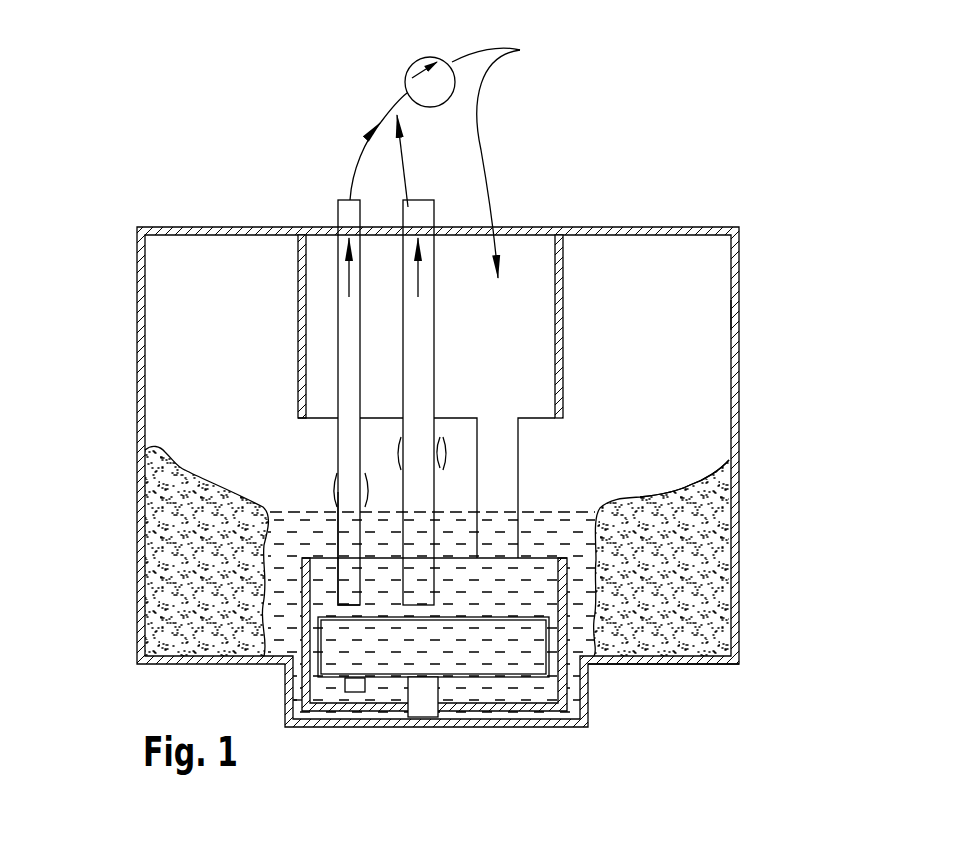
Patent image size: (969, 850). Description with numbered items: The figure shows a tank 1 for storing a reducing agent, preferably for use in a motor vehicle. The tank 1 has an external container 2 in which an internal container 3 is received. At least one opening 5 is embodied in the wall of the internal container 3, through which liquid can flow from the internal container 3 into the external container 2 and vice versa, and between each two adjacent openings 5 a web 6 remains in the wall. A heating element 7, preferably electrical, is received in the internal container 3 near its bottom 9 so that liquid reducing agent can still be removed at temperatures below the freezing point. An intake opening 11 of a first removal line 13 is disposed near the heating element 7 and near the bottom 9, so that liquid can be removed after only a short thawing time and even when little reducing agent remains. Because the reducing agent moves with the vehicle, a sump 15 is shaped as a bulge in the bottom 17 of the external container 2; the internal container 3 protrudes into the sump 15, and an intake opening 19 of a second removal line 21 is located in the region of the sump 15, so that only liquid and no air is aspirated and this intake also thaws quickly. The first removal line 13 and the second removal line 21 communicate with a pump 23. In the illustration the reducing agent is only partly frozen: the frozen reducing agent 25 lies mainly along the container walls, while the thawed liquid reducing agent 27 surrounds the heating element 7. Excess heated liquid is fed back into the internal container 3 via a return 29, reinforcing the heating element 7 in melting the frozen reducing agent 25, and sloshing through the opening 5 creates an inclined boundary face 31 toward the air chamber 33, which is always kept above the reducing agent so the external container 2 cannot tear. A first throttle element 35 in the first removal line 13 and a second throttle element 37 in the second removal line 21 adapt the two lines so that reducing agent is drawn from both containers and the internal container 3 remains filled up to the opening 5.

The tank 1 is at (137, 206).
The external container 2 is at (183, 232).
The internal container 3 is at (298, 328).
The opening 5 is at (538, 497).
The web 6 is at (507, 475).
The heating element 7 is at (533, 657).
The bottom 9 is at (332, 693).
The intake opening 11 is at (358, 692).
The first removal line 13 is at (340, 445).
The sump 15 is at (492, 711).
The bottom 17 is at (688, 664).
The intake opening 19 is at (422, 717).
The second removal line 21 is at (430, 355).
The pump 23 is at (405, 70).
The frozen reducing agent 25 is at (170, 583).
The liquid reducing agent 27 is at (313, 537).
The return 29 is at (500, 257).
The inclined boundary face 31 is at (660, 505).
The air chamber 33 is at (703, 313).
The first throttle element 35 is at (340, 492).
The second throttle element 37 is at (442, 452).